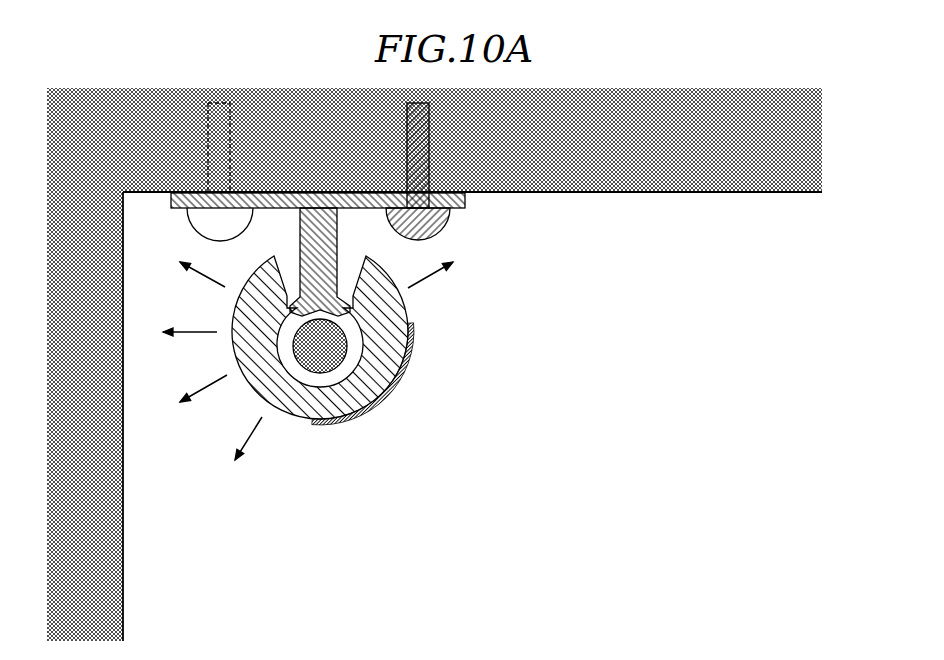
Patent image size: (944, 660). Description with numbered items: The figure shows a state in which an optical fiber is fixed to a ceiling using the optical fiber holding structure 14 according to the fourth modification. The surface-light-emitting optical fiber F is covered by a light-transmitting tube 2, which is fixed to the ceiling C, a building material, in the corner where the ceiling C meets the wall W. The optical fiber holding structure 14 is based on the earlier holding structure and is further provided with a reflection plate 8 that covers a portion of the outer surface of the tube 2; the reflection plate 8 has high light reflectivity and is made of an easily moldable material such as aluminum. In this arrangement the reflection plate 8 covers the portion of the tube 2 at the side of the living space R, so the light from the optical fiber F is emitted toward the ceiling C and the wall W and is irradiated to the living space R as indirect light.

The light-transmitting tube 2 is at (393, 316).
The reflection plate 8 is at (388, 398).
The optical fiber holding structure 14 is at (436, 363).
The ceiling C is at (640, 148).
The wall W is at (91, 345).
The living space R is at (638, 495).
The surface-light-emitting optical fiber F is at (309, 371).